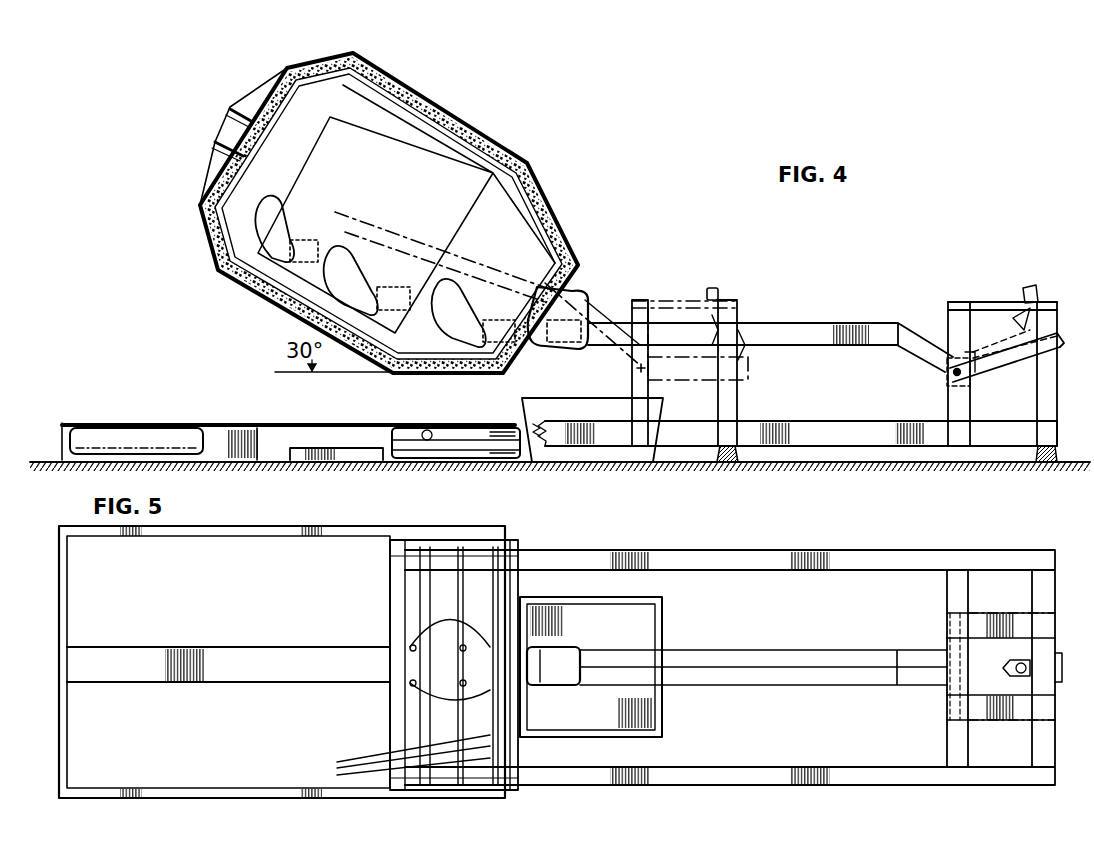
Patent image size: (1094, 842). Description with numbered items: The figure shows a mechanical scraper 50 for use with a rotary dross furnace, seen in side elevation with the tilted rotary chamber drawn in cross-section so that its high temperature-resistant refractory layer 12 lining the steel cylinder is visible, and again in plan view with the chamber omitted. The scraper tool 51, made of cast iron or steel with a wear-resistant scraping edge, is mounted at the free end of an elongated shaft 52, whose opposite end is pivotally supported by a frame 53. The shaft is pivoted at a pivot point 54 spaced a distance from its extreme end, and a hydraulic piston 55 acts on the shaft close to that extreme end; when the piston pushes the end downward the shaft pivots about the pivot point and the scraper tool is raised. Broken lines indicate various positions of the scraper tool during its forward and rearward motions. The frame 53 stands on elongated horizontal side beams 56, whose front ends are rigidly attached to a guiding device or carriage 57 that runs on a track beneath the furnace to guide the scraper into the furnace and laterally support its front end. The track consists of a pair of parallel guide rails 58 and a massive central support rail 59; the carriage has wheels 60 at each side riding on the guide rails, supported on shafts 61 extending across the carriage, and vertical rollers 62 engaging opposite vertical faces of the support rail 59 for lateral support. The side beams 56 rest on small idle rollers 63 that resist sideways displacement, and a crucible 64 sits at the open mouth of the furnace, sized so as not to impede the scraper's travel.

In FIG. 4, the refractory layer 12 is at (462, 140).
In FIG. 4, the mechanical scraper 50 is at (722, 255).
In FIG. 5, the mechanical scraper 50 is at (778, 552).
In FIG. 4, the scraper tool 51 is at (560, 312).
In FIG. 5, the scraper tool 51 is at (563, 646).
In FIG. 4, the elongated shaft 52 is at (818, 327).
In FIG. 5, the elongated shaft 52 is at (773, 650).
In FIG. 4, the frame 53 is at (995, 287).
In FIG. 4, the pivot point 54 is at (953, 375).
In FIG. 4, the hydraulic piston 55 is at (1018, 318).
In FIG. 4, the side beams 56 is at (815, 432).
In FIG. 5, the side beams 56 is at (898, 575).
In FIG. 4, the carriage 57 is at (150, 424).
In FIG. 5, the carriage 57 is at (405, 565).
In FIG. 5, the guide rails 58 is at (232, 545).
In FIG. 5, the central support rail 59 is at (148, 648).
In FIG. 4, the wheels 60 is at (492, 463).
In FIG. 5, the shafts 61 is at (403, 759).
In FIG. 5, the vertical rollers 62 is at (458, 648).
In FIG. 4, the idle rollers 63 is at (722, 460).
In FIG. 4, the crucible 64 is at (572, 452).
In FIG. 5, the crucible 64 is at (662, 708).